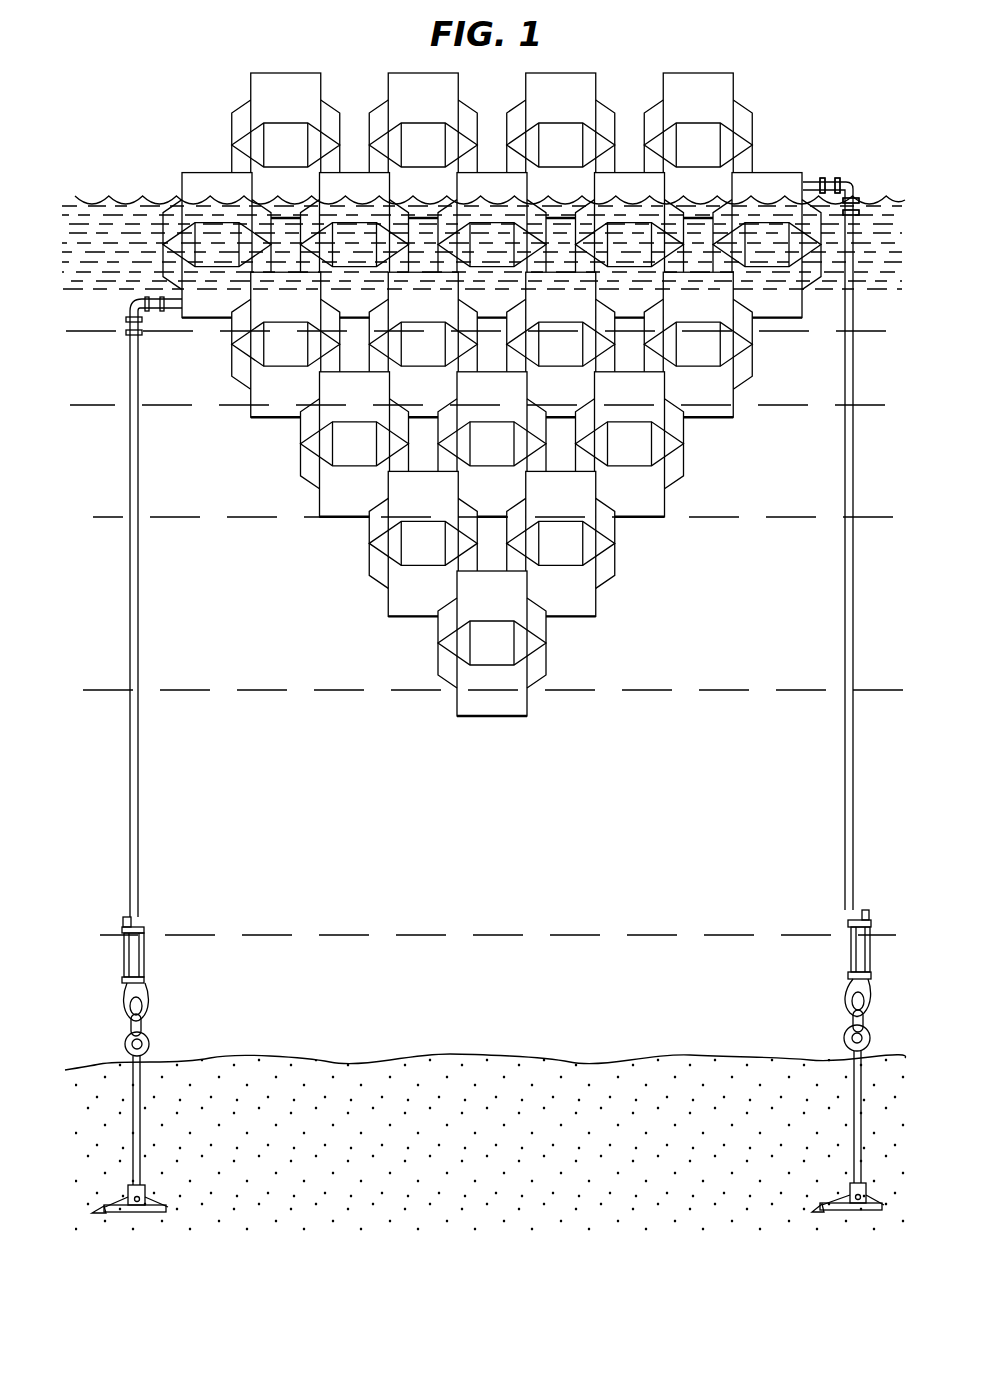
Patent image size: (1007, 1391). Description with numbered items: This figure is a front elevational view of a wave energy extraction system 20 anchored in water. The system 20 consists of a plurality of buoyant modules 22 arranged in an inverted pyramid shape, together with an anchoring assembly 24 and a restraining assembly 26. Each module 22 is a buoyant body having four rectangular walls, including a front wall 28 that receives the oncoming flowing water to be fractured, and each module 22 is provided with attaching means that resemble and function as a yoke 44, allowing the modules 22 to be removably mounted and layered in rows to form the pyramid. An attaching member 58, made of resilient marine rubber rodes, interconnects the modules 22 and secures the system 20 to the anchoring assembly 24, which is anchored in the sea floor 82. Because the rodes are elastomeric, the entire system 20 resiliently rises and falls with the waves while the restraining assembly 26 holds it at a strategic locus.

The system 20 is at (450, 396).
The module 22 is at (492, 396).
The anchoring assembly 24 is at (112, 1186).
The restraining assembly 26 is at (96, 762).
The front wall 28 is at (280, 146).
The yoke 44 is at (267, 82).
The attaching member 58 is at (852, 182).
The sea floor 82 is at (105, 1093).